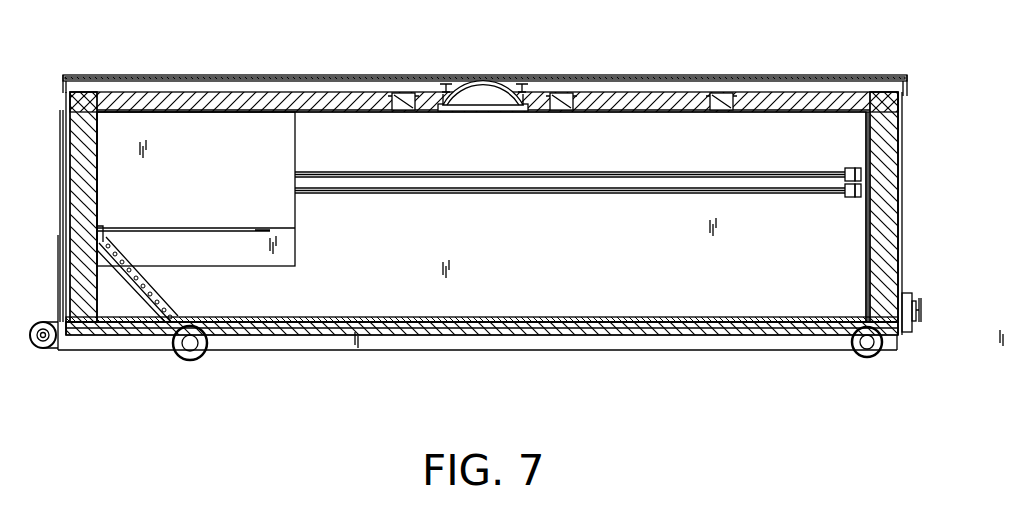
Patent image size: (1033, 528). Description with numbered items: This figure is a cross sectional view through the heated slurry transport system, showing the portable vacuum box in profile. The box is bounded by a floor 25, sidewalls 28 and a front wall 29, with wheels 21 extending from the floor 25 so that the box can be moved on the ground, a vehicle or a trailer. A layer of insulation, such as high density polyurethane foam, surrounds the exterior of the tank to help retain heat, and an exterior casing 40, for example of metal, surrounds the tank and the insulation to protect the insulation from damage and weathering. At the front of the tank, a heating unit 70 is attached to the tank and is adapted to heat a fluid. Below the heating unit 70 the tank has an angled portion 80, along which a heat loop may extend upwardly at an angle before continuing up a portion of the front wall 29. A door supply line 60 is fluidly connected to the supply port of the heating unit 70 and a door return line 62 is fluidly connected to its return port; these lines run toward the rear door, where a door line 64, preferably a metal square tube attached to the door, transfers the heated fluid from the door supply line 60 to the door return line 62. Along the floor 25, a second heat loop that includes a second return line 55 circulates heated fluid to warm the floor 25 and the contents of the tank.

The wheels 21 is at (197, 357).
The floor 25 is at (625, 325).
The sidewalls 28 is at (533, 261).
The front wall 29 is at (97, 148).
The exterior casing 40 is at (830, 75).
The second return line 55 is at (383, 330).
The door supply line 60 is at (610, 188).
The door return line 62 is at (588, 172).
The door line 64 is at (866, 248).
The heating unit 70 is at (199, 179).
The angled portion 80 is at (118, 300).